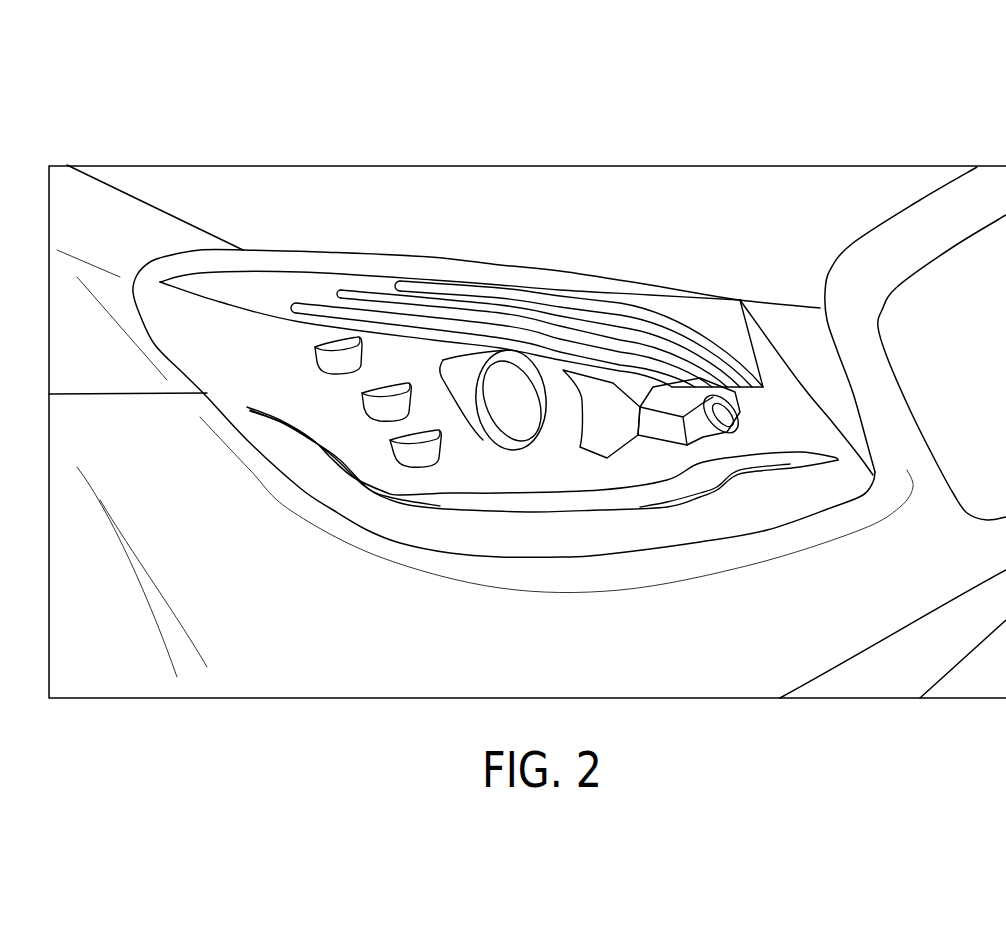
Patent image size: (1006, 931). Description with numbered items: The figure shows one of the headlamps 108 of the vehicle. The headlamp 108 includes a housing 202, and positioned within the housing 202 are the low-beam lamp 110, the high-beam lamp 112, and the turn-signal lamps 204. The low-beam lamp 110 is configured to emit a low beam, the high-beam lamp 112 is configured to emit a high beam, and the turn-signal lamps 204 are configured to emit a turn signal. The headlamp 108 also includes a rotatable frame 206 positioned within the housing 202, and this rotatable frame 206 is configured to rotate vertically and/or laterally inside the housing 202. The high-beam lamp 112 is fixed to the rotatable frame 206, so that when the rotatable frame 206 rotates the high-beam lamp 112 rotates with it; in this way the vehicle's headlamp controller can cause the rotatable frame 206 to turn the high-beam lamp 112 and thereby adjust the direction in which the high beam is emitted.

The headlamp 108 is at (133, 132).
The housing 202 is at (253, 293).
The turn-signal lamps 204 is at (342, 360).
The rotatable frame 206 is at (430, 407).
The high-beam lamp 112 is at (517, 400).
The low-beam lamp 110 is at (712, 408).